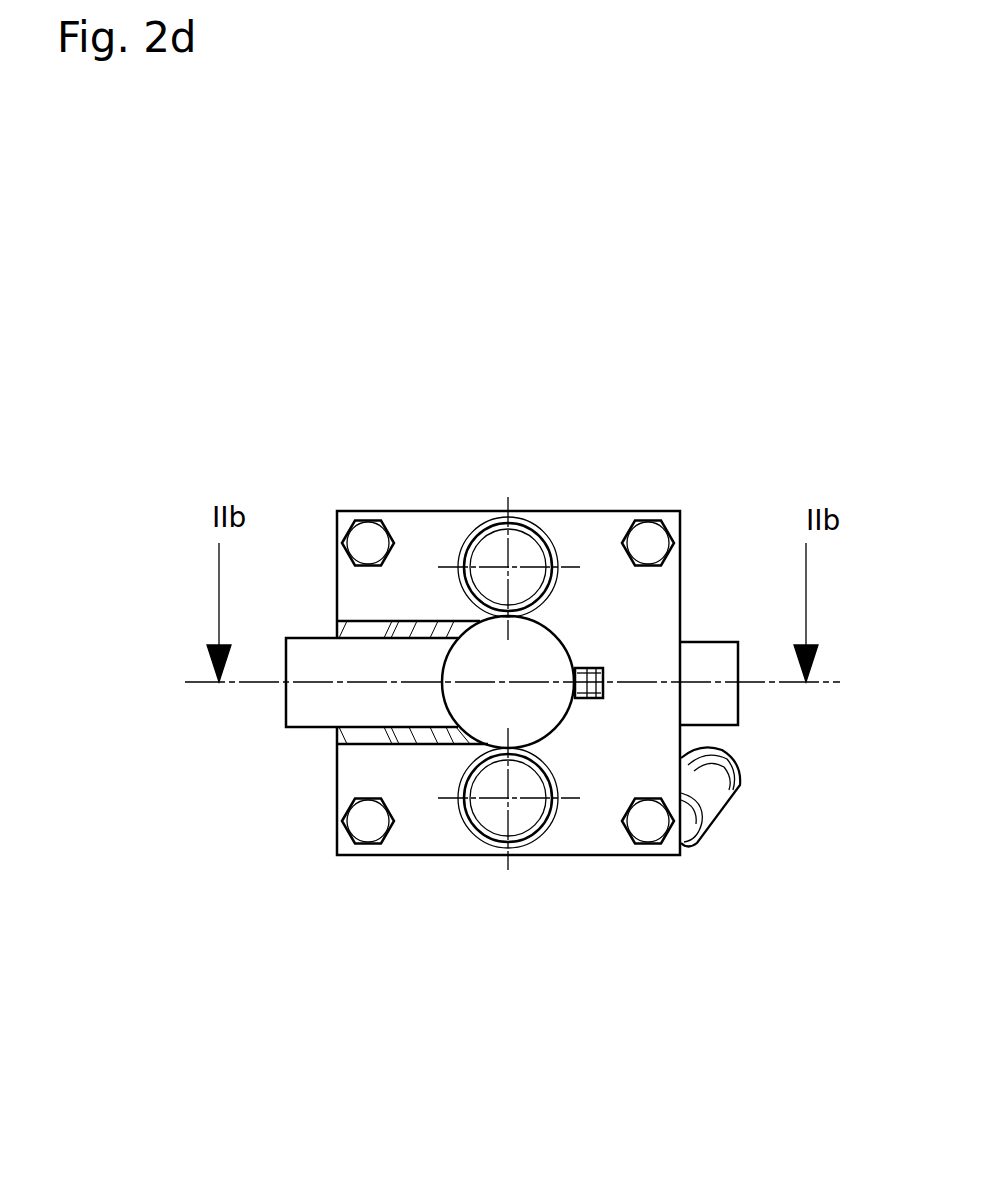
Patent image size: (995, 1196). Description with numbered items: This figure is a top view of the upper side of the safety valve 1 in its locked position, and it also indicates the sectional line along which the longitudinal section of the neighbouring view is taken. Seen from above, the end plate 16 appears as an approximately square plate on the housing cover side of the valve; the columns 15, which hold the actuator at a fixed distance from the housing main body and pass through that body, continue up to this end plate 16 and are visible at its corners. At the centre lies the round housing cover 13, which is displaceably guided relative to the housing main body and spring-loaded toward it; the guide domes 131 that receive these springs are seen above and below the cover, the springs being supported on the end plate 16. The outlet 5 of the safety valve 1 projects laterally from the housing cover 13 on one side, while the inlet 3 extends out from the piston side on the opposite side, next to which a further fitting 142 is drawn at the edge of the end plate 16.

The safety valve 1 is at (521, 390).
The inlet 3 is at (716, 703).
The outlet 5 is at (310, 695).
The housing cover 13 is at (545, 658).
The columns 15 is at (365, 538).
The end plate 16 is at (603, 537).
The guide domes 131 is at (526, 822).
The fitting 142 is at (708, 788).